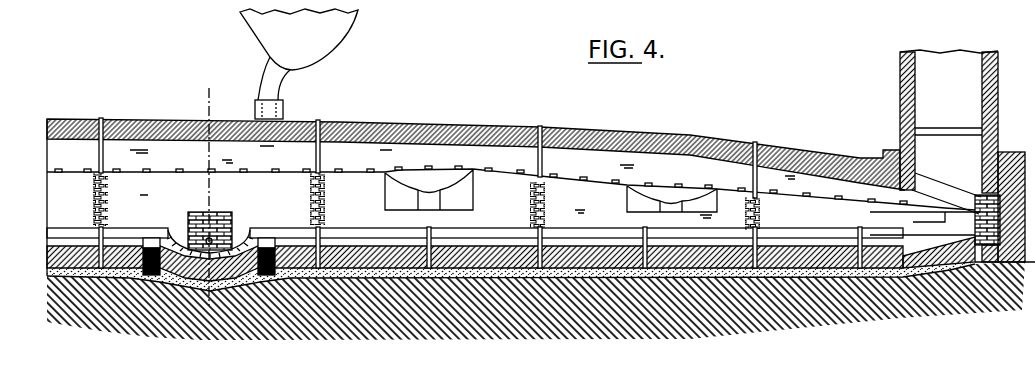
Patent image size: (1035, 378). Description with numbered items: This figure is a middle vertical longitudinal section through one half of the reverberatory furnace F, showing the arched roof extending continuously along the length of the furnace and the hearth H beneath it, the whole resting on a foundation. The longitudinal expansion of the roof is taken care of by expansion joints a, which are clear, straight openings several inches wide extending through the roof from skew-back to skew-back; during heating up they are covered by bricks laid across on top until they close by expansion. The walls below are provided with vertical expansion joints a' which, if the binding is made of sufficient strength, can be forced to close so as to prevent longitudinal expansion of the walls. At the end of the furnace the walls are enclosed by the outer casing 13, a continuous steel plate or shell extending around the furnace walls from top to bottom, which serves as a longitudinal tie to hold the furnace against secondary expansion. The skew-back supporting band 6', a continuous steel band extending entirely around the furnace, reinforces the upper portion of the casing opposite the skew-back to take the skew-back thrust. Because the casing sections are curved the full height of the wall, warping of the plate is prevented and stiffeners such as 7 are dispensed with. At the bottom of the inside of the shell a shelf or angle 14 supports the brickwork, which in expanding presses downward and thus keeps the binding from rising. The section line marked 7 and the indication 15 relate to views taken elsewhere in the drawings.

The reverberatory furnace F is at (75, 150).
The stiffeners 7 is at (217, 102).
The expansion joints a is at (545, 138).
The vertical expansion joints a' is at (408, 201).
The hearth H is at (287, 250).
The outer casing 13 is at (1003, 158).
The skew-back supporting band 6' is at (1002, 184).
The shelf or angle 14 is at (1010, 262).
The upper structure 15 is at (839, 7).